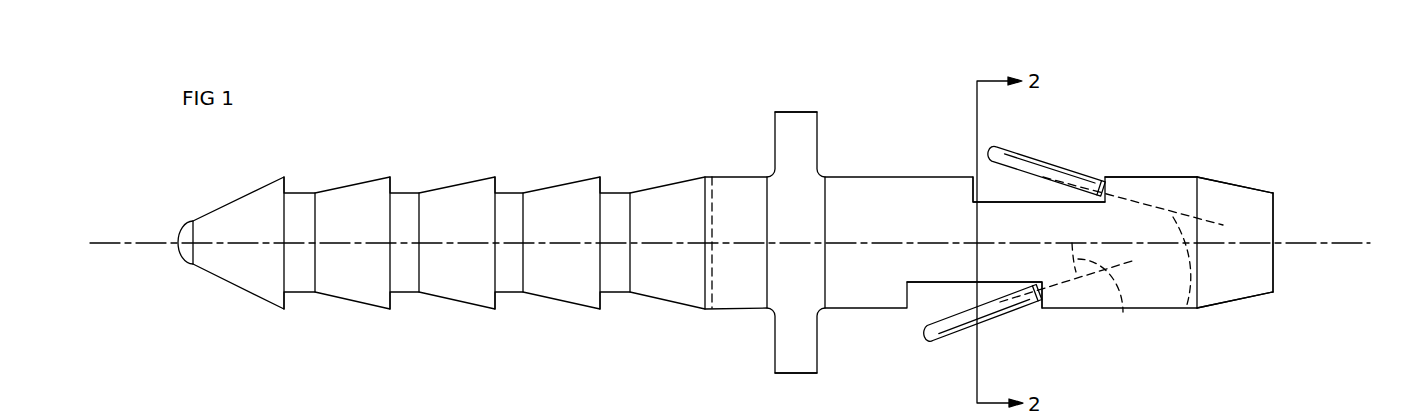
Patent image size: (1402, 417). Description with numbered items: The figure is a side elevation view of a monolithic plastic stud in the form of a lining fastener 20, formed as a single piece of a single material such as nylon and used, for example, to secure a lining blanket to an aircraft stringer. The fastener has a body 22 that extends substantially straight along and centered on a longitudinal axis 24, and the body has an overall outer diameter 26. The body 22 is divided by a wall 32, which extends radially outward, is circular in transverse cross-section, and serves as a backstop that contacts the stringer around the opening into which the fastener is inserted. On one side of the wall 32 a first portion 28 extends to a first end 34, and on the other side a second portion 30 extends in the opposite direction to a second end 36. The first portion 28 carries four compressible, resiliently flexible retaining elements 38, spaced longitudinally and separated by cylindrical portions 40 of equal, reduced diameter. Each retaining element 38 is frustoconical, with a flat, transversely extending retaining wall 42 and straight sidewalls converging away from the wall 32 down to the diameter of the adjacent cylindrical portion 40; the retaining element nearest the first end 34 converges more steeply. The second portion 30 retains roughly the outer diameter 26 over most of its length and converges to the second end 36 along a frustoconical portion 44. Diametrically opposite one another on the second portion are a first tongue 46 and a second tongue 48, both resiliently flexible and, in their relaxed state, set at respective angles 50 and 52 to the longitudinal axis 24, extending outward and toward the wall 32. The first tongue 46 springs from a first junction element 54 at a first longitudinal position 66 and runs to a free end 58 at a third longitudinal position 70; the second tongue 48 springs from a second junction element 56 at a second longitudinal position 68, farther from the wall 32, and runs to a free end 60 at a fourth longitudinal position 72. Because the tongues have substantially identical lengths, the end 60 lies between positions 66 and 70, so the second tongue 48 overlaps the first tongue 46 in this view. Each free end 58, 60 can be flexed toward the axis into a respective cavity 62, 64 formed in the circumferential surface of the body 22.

The lining fastener 20 is at (460, 120).
The body 22 is at (738, 175).
The longitudinal axis 24 is at (108, 240).
The outer diameter 26 is at (710, 208).
The first portion 28 is at (435, 167).
The second portion 30 is at (1157, 148).
The wall 32 is at (808, 110).
The first end 34 is at (180, 250).
The second end 36 is at (1275, 268).
The retaining elements 38 is at (257, 270).
The cylindrical portions 40 is at (293, 278).
The retaining walls 42 is at (286, 184).
The frustoconical portion 44 is at (1247, 185).
The first tongue 46 is at (995, 322).
The second tongue 48 is at (1075, 165).
The angle 50 is at (1108, 298).
The angle 52 is at (1185, 277).
The first junction element 54 is at (1042, 295).
The second junction element 56 is at (1103, 175).
The end of first tongue 58 is at (927, 345).
The end of second tongue 60 is at (993, 147).
The cavity 62 is at (922, 298).
The cavity 64 is at (993, 192).
The first longitudinal position 66 is at (1040, 243).
The second longitudinal position 68 is at (1105, 243).
The third longitudinal position 70 is at (920, 243).
The fourth longitudinal position 72 is at (993, 242).